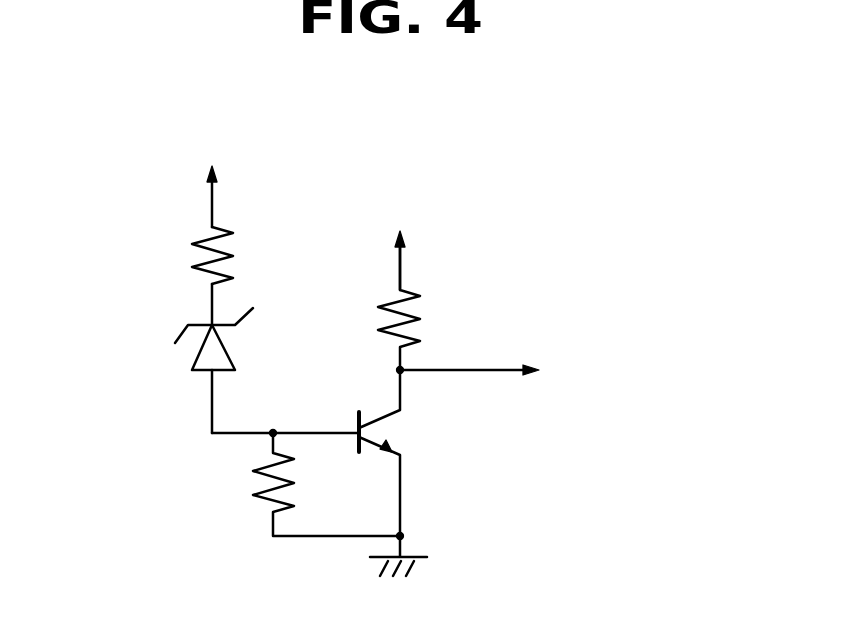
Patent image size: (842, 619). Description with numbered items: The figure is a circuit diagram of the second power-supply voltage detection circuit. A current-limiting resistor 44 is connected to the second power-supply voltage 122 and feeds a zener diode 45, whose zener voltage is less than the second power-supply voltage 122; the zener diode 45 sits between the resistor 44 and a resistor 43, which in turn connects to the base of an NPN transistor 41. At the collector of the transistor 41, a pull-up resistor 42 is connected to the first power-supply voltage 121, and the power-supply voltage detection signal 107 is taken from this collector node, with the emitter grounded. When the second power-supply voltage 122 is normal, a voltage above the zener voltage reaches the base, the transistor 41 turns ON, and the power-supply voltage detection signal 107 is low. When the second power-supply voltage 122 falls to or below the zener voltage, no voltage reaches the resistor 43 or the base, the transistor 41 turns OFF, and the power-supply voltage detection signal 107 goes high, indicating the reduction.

The transistor 41 is at (396, 430).
The resistor 42 is at (378, 316).
The resistor 43 is at (255, 481).
The current-limiting resistor 44 is at (192, 251).
The zener diode 45 is at (185, 358).
The power-supply voltage detection signal 107 is at (583, 303).
The first power-supply voltage 121 is at (439, 168).
The second power-supply voltage 122 is at (245, 100).